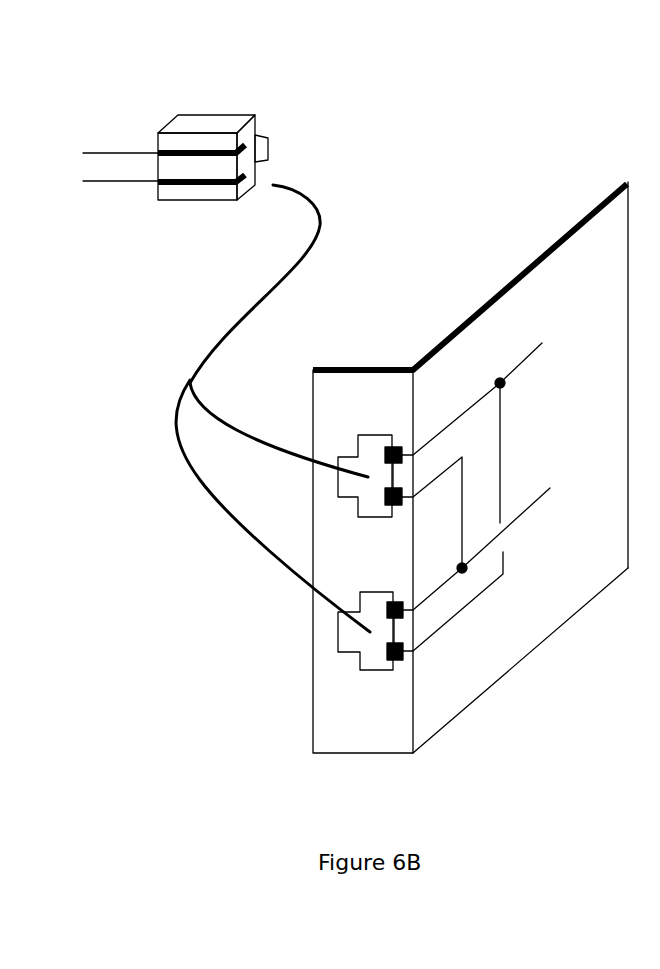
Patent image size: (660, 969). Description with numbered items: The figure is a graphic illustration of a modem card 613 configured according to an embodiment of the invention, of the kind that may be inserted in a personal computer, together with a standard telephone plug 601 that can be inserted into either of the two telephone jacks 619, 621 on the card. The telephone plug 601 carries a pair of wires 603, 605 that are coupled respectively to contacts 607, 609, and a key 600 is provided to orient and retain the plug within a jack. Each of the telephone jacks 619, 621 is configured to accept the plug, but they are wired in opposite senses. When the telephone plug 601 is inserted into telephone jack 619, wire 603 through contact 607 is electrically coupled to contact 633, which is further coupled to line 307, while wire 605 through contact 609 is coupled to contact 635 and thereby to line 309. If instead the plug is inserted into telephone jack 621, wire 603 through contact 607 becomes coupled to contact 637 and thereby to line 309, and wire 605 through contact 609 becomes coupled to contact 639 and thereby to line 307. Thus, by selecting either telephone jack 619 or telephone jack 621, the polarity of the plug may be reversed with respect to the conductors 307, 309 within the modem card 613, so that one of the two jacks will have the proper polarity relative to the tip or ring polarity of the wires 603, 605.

The key 600 is at (282, 146).
The telephone plug 601 is at (242, 108).
The wire 603 is at (103, 148).
The wire 605 is at (103, 192).
The contact 607 is at (197, 147).
The contact 609 is at (197, 188).
The modem card 613 is at (543, 222).
The telephone jack 619 is at (355, 437).
The telephone jack 621 is at (358, 673).
The contact 633 is at (405, 438).
The contact 635 is at (400, 513).
The contact 637 is at (404, 597).
The contact 639 is at (405, 668).
The line 307 is at (538, 343).
The line 309 is at (543, 483).